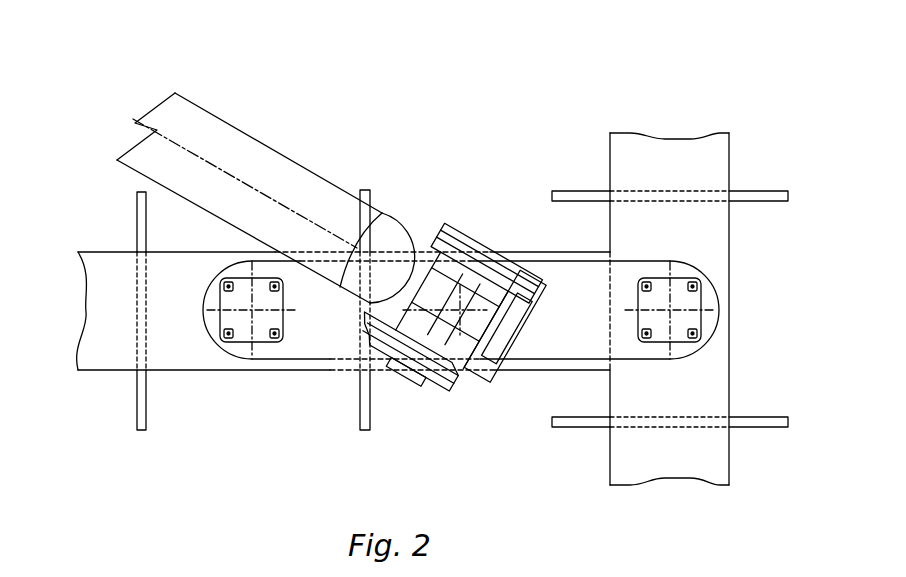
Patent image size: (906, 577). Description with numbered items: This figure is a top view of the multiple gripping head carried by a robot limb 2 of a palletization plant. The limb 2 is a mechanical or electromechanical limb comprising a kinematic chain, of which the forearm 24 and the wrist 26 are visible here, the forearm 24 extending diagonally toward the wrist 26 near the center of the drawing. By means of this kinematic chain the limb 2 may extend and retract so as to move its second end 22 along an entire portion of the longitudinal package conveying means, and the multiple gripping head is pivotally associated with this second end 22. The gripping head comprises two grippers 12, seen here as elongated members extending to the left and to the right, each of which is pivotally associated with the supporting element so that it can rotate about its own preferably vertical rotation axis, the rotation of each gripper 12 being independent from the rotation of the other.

The limb 2 is at (196, 88).
The gripper 12 is at (108, 270).
The second end 22 is at (420, 205).
The forearm 24 is at (262, 165).
The wrist 26 is at (487, 285).